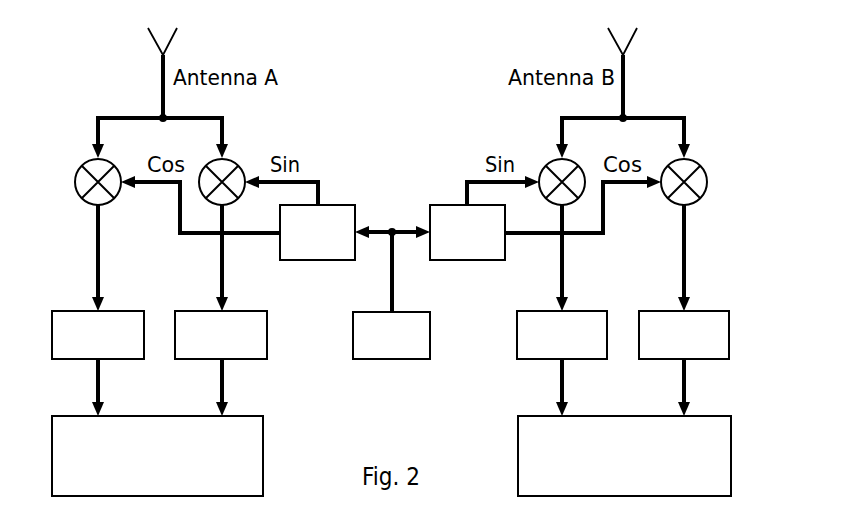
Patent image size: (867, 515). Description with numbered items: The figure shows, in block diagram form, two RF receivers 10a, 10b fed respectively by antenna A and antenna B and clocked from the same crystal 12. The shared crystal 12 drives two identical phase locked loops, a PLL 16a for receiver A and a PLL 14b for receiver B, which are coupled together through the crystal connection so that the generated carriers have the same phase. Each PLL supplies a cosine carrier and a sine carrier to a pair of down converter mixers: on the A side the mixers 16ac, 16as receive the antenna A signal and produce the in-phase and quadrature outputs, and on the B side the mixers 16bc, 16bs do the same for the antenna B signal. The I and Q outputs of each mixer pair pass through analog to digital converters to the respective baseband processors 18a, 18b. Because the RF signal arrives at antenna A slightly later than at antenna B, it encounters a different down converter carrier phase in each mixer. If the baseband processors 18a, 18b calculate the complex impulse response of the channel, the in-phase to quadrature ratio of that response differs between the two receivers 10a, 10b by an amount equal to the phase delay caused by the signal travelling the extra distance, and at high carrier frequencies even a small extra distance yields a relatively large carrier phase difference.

The receiver 10a is at (282, 354).
The receiver 10b is at (499, 354).
The crystal 12 is at (430, 338).
The phase locked loop 14b is at (467, 261).
The phase locked loop 16a is at (318, 261).
The down converter mixer 16ac is at (82, 165).
The down converter mixer 16as is at (238, 165).
The down converter mixer 16bc is at (545, 165).
The down converter mixer 16bs is at (702, 165).
The baseband processor 18a is at (263, 455).
The baseband processor 18b is at (518, 457).